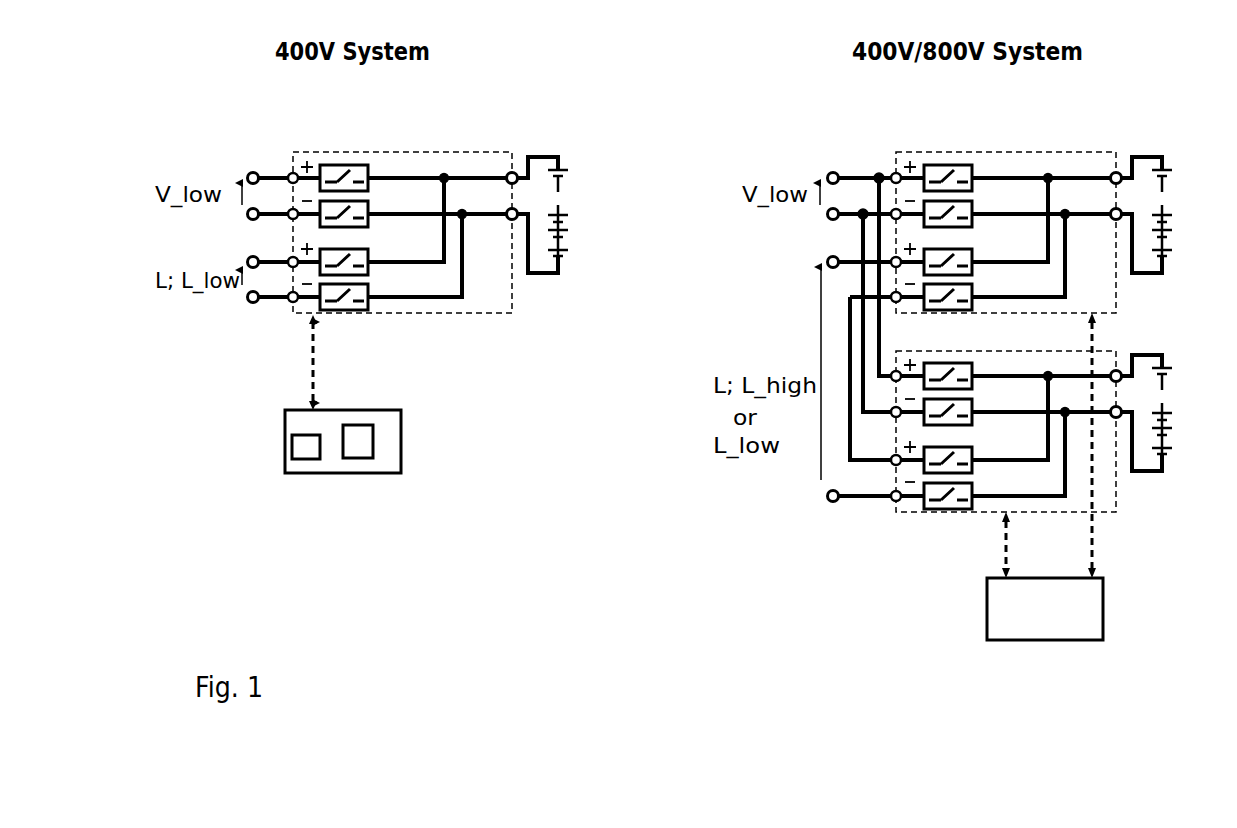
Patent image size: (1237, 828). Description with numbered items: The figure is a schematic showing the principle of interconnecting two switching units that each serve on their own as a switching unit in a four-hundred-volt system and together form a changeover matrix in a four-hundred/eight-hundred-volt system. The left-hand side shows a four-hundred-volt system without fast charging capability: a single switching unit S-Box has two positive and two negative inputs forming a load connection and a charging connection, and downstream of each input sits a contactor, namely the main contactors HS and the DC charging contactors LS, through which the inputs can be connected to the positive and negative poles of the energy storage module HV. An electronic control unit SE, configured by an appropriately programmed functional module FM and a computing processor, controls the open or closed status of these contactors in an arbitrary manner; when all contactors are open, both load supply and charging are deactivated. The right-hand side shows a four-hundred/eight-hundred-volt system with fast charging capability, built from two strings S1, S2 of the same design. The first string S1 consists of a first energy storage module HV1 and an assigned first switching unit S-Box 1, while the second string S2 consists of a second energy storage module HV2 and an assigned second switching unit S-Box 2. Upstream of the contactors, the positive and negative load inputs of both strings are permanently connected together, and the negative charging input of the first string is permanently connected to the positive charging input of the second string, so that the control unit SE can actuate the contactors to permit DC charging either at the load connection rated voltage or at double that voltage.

The main contactors HS is at (372, 205).
The DC charging contactors LS is at (373, 272).
The energy storage module HV is at (538, 192).
The switching unit S-Box is at (487, 315).
The electronic control unit SE is at (402, 443).
The functional module FM is at (358, 459).
The first switching unit S-Box 1 is at (1097, 152).
The second switching unit S-Box 2 is at (1118, 492).
The first energy storage module HV1 is at (1161, 192).
The second energy storage module HV2 is at (1161, 393).
The first string S1 is at (1163, 215).
The second string S2 is at (1163, 413).